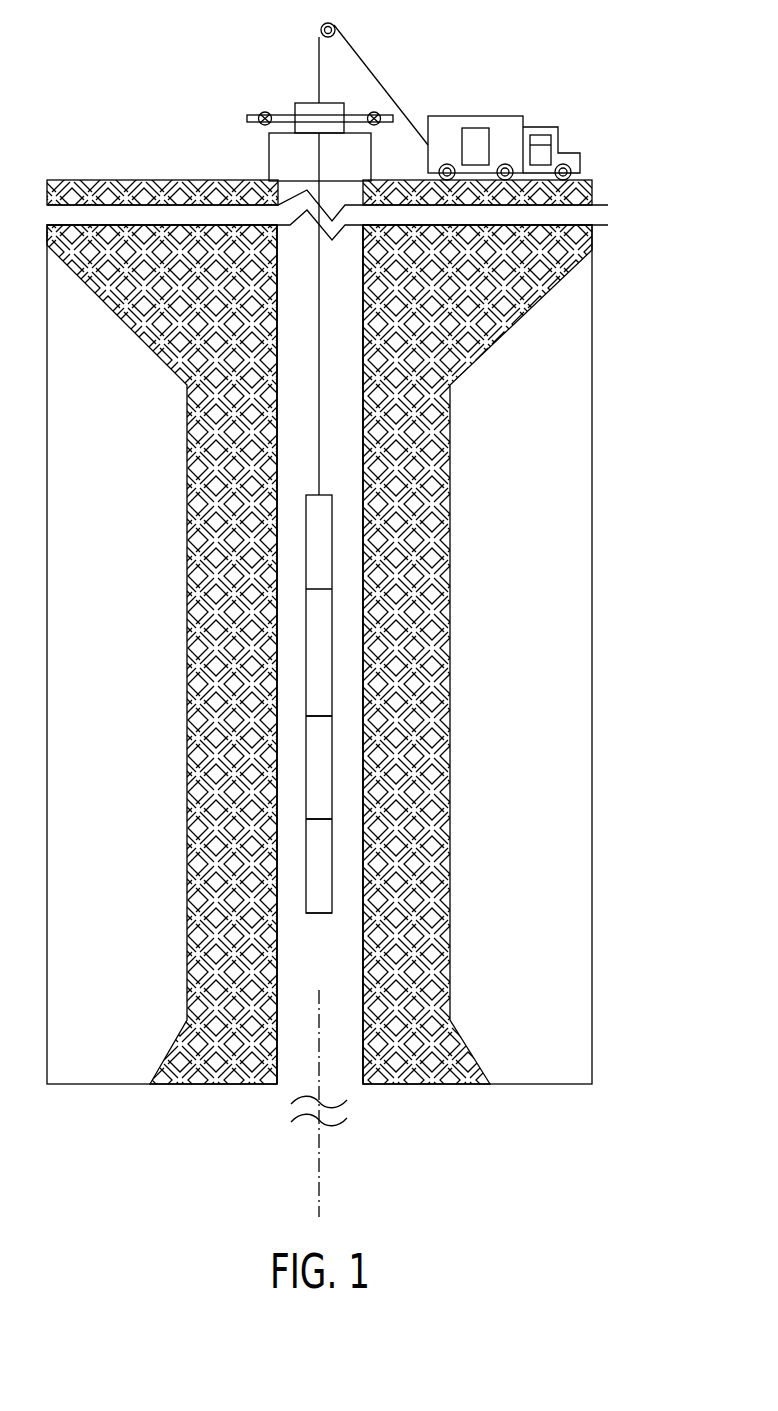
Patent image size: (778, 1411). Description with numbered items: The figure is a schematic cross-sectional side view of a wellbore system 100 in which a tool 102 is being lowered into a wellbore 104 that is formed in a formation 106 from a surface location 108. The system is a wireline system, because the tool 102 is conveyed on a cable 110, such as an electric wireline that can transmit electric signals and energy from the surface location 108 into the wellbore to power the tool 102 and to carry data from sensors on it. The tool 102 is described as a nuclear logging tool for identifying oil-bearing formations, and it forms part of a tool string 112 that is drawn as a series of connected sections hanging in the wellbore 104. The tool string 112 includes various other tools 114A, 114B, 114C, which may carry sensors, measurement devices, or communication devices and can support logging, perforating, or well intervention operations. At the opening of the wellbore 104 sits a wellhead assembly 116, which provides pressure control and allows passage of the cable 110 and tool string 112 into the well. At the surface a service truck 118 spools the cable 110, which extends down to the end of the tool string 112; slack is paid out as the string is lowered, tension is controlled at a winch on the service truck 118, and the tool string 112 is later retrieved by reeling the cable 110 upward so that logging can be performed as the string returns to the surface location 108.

The wellbore system 100 is at (494, 33).
The tool 102 is at (316, 540).
The wellbore 104 is at (238, 270).
The formation 106 is at (567, 423).
The surface location 108 is at (585, 182).
The cable 110 is at (381, 78).
The tool string 112 is at (487, 608).
The tool 114A is at (322, 682).
The tool 114B is at (322, 790).
The tool 114C is at (320, 865).
The wellhead assembly 116 is at (303, 82).
The service truck 118 is at (541, 96).